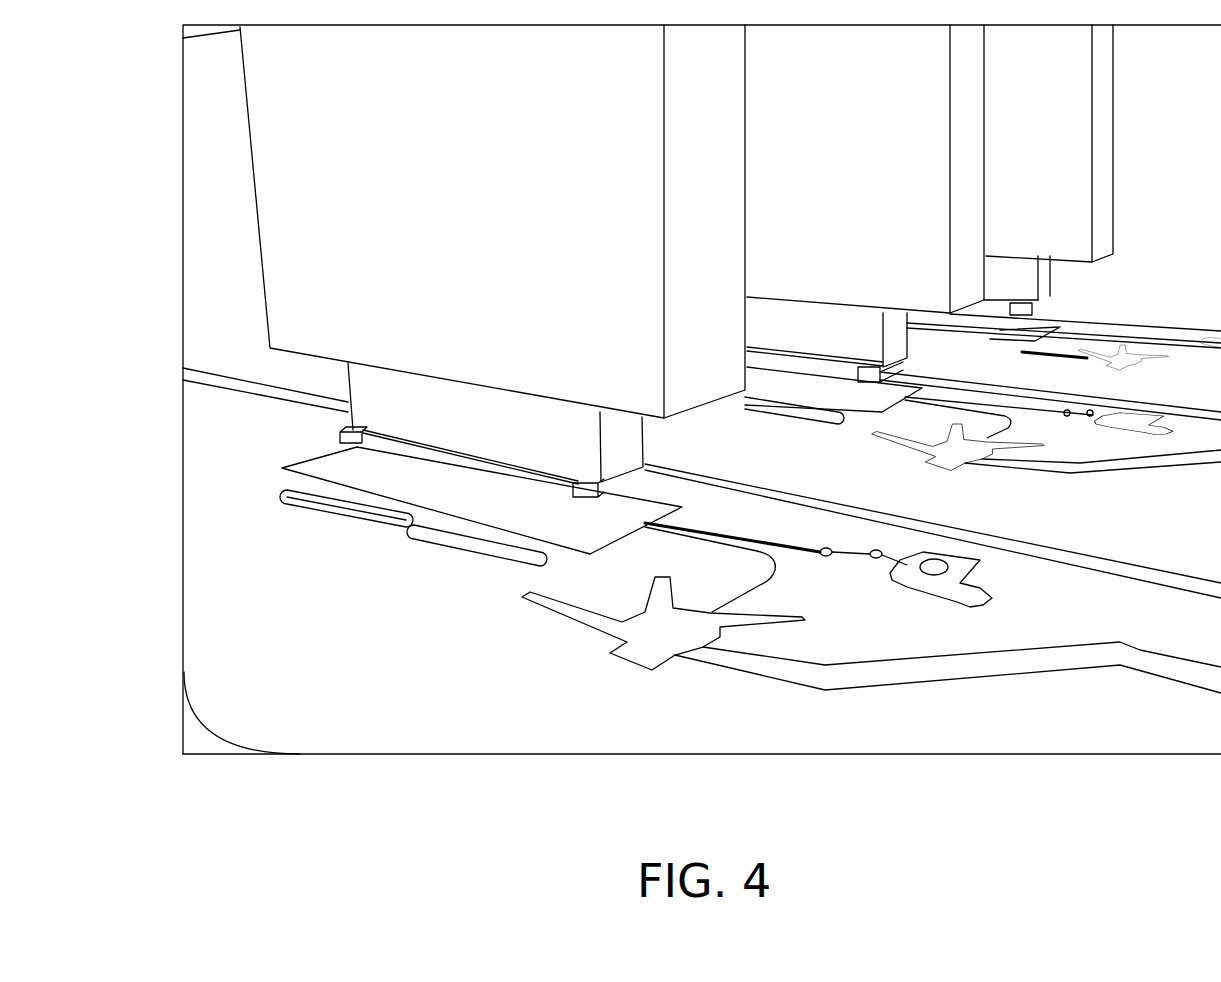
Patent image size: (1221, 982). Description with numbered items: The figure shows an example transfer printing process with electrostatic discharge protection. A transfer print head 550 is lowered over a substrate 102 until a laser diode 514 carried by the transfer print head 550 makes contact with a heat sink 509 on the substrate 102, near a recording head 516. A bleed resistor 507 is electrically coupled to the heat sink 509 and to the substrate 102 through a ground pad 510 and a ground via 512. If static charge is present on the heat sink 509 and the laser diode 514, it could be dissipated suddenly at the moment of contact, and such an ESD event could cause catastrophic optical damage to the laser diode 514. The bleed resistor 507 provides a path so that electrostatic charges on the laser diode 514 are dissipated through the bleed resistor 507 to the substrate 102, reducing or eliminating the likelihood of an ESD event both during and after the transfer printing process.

The substrate 102 is at (327, 715).
The transfer print head 550 is at (308, 182).
The laser diode 514 is at (590, 490).
The heat sink 509 is at (305, 467).
The bleed resistor 507 is at (848, 557).
The recording head 516 is at (658, 660).
The ground pad 510 is at (965, 593).
The ground via 512 is at (935, 562).